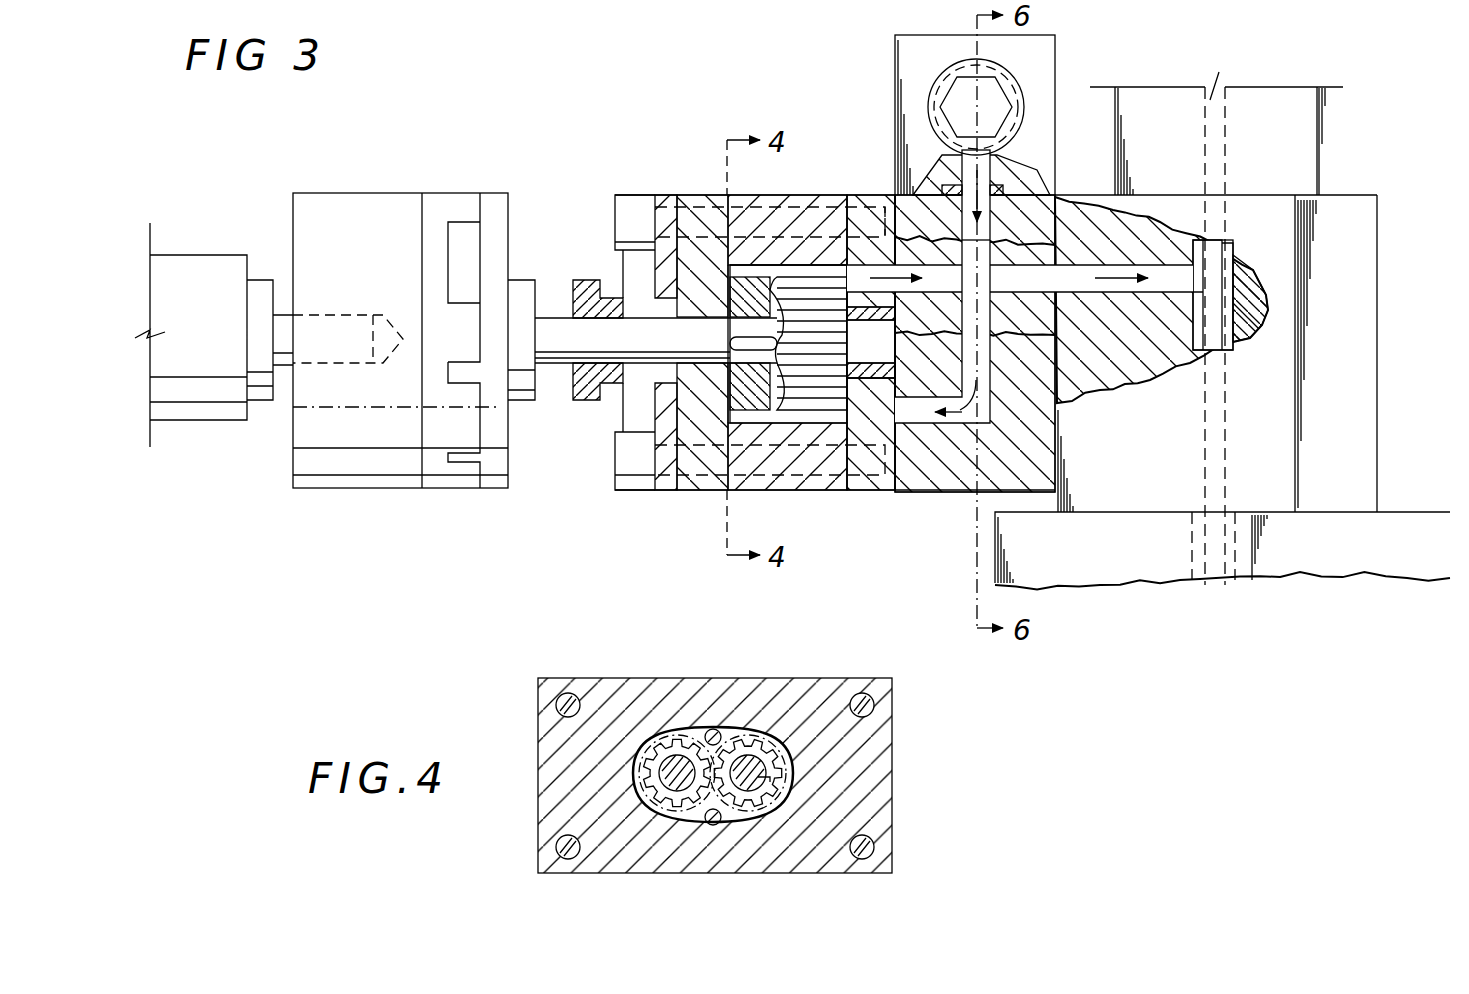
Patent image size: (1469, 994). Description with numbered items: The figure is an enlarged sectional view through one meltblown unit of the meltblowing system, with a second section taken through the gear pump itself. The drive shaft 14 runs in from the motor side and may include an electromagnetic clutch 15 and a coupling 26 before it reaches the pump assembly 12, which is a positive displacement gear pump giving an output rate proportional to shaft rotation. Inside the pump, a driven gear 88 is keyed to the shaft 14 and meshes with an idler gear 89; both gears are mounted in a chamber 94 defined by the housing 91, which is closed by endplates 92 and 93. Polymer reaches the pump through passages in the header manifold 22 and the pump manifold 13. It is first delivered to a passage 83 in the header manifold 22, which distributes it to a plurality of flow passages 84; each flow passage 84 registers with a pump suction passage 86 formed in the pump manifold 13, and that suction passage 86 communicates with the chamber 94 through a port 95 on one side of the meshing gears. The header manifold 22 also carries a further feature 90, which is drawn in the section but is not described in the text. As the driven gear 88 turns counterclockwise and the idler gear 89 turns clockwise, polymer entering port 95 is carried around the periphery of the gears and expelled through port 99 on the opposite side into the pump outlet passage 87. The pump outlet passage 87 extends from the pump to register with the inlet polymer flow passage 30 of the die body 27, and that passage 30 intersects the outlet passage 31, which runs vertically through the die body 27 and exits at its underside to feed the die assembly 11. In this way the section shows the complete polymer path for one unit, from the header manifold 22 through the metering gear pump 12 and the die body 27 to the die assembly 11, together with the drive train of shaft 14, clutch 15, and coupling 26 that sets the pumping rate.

In FIG. 3, the die assembly 11 is at (1382, 250).
In FIG. 3, the pump assembly 12 is at (745, 195).
In FIG. 3, the pump manifold 13 is at (967, 496).
In FIG. 3, the drive shaft 14 is at (558, 330).
In FIG. 4, the drive shaft 14 is at (752, 770).
In FIG. 3, the electromagnetic clutch 15 is at (383, 228).
In FIG. 3, the header manifold 22 is at (893, 63).
In FIG. 3, the coupling 26 is at (192, 280).
In FIG. 3, the die body 27 is at (1330, 345).
In FIG. 3, the polymer flow passage 30 is at (1178, 275).
In FIG. 3, the outlet passage 31 is at (1234, 305).
In FIG. 3, the passage 83 is at (940, 65).
In FIG. 3, the flow passage 84 is at (982, 165).
In FIG. 3, the pump suction passage 86 is at (975, 360).
In FIG. 3, the pump outlet passage 87 is at (1015, 282).
In FIG. 3, the driven gear 88 is at (808, 345).
In FIG. 4, the driven gear 88 is at (750, 755).
In FIG. 4, the idler gear 89 is at (672, 760).
In FIG. 3, the hexagonal socket 90 is at (1015, 70).
In FIG. 3, the housing 91 is at (695, 489).
In FIG. 4, the housing 91 is at (870, 773).
In FIG. 3, the endplate 92 is at (703, 216).
In FIG. 3, the endplate 93 is at (870, 205).
In FIG. 3, the chamber 94 is at (828, 415).
In FIG. 3, the port 95 is at (875, 405).
In FIG. 4, the port 95 is at (716, 822).
In FIG. 3, the port 99 is at (842, 238).
In FIG. 4, the port 99 is at (713, 733).